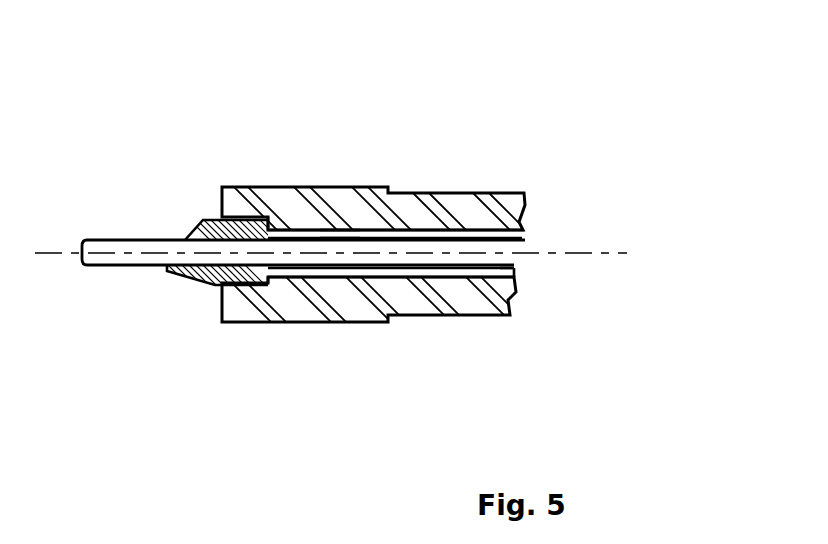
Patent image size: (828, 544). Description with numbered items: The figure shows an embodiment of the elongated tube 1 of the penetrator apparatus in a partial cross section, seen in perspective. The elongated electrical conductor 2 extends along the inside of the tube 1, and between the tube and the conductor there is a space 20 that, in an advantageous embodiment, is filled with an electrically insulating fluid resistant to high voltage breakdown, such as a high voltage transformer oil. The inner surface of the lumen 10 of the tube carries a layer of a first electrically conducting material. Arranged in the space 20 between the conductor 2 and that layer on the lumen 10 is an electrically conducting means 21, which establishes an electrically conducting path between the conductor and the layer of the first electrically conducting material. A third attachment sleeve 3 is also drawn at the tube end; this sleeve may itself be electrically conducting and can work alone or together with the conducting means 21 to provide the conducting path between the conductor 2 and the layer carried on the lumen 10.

The elongated tube 1 is at (445, 192).
The elongated electrical conductor 2 is at (525, 245).
The third attachment sleeve 3 is at (177, 232).
The lumen 10 is at (325, 272).
The space 20 is at (522, 268).
The electrically conducting means 21 is at (338, 235).